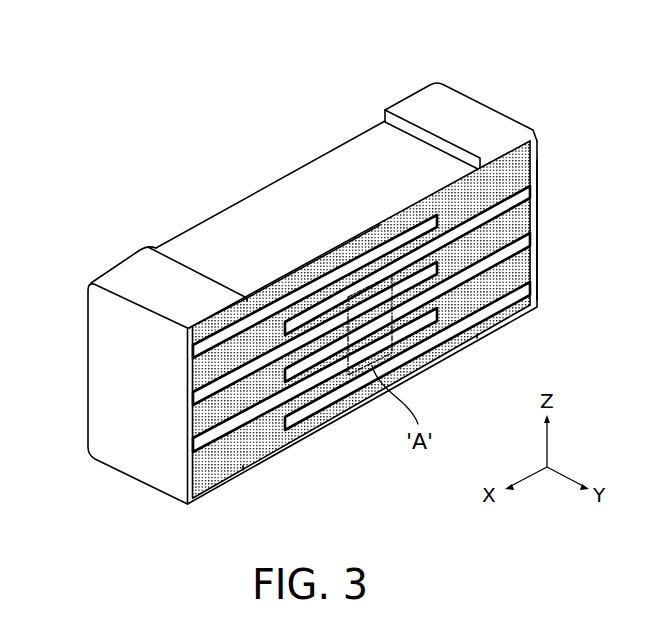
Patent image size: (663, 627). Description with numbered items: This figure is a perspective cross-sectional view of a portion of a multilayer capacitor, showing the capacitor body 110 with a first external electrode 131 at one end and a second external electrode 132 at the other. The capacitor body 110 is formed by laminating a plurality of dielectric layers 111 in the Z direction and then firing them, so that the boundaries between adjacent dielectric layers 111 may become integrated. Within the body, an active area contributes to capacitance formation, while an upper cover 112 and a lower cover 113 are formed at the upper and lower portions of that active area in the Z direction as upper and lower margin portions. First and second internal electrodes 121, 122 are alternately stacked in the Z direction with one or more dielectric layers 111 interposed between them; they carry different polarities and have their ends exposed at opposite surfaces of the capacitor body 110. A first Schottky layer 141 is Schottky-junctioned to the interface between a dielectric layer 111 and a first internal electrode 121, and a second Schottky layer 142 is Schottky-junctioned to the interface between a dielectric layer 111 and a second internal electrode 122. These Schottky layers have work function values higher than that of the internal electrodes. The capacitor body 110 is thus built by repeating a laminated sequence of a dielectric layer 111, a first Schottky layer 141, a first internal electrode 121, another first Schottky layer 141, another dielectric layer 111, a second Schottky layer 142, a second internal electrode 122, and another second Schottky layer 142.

The capacitor body 110 is at (290, 207).
The dielectric layer 111 is at (532, 207).
The upper cover 112 is at (281, 298).
The lower cover 113 is at (283, 449).
The first internal electrode 121 is at (190, 371).
The second internal electrode 122 is at (532, 181).
The first external electrode 131 is at (127, 267).
The second external electrode 132 is at (421, 102).
The first Schottky layer 141 is at (196, 349).
The second Schottky layer 142 is at (533, 228).